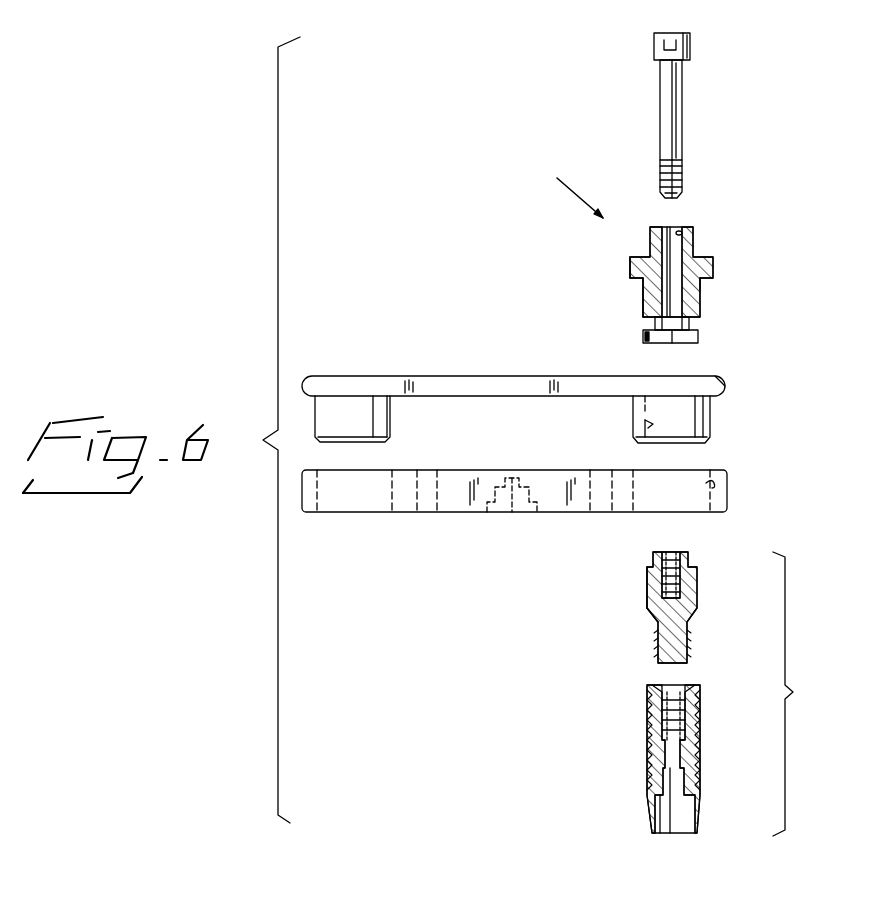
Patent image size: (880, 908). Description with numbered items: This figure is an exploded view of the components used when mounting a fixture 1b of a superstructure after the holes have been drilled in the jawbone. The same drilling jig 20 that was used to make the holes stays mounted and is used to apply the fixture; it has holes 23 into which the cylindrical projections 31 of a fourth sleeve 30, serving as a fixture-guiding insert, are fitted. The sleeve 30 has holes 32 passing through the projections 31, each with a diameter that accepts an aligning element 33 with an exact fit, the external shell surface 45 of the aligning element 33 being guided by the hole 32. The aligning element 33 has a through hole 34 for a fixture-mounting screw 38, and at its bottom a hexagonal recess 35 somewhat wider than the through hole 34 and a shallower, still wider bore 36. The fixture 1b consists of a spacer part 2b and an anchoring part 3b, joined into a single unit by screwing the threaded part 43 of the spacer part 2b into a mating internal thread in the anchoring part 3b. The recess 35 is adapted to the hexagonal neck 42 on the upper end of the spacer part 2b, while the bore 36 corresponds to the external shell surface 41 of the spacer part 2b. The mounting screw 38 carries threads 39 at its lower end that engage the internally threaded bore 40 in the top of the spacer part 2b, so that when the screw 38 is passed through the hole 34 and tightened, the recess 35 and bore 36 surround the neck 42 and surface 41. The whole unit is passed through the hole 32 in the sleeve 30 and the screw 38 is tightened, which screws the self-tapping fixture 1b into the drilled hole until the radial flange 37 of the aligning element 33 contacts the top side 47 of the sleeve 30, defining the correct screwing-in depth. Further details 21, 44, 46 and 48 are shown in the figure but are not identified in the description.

The fixture 1b is at (799, 694).
The spacer part 2b is at (663, 624).
The anchoring part 3b is at (648, 758).
The drilling jig 20 is at (455, 505).
The recess 21 is at (512, 512).
The holes 23 is at (714, 489).
The fourth sleeve 30 is at (480, 385).
The cylindrical projections 31 is at (710, 422).
The holes 32 is at (640, 433).
The aligning element 33 is at (566, 186).
The through hole 34 is at (680, 234).
The hexagonal recess 35 is at (682, 322).
The bore 36 is at (643, 347).
The radial flange 37 is at (632, 268).
The fixture-mounting screw 38 is at (667, 118).
The threads 39 is at (672, 175).
The internally threaded bore 40 is at (683, 556).
The external shell surface 41 is at (648, 591).
The hexagonal neck 42 is at (662, 556).
The threaded part 43 is at (690, 637).
The internal thread 44 is at (668, 720).
The external shell surface 45 is at (643, 299).
The bore 46 is at (655, 568).
The top side 47 is at (722, 378).
The flange 48 is at (706, 262).